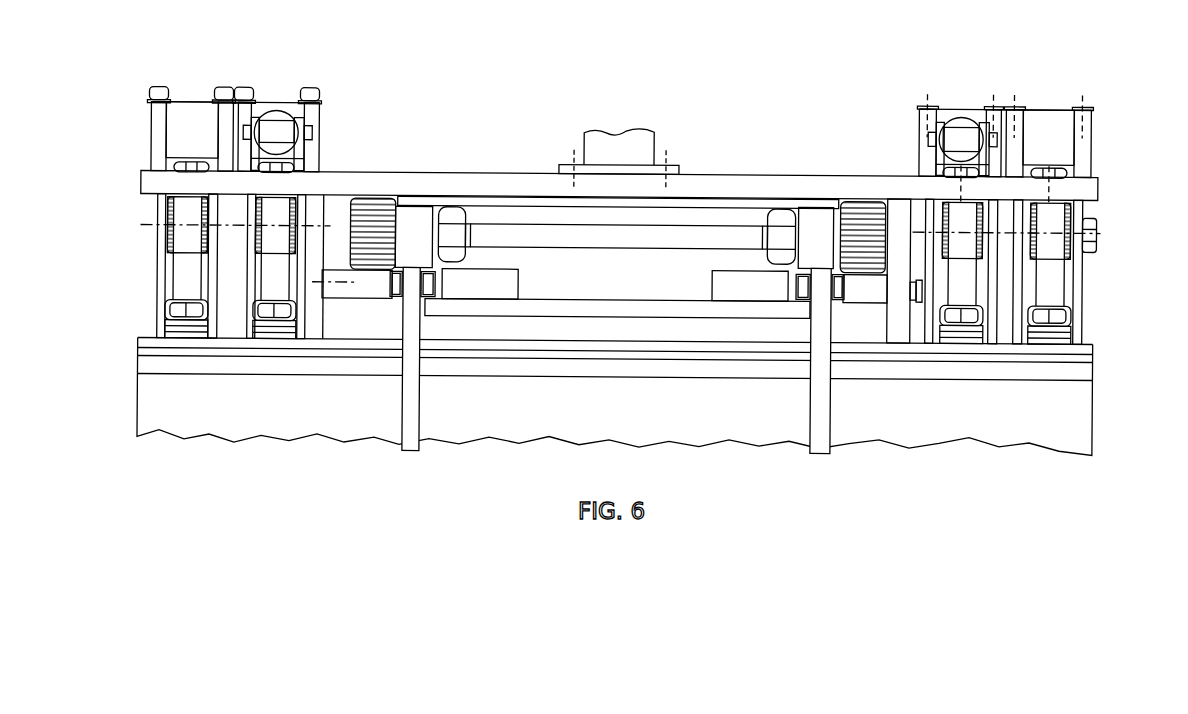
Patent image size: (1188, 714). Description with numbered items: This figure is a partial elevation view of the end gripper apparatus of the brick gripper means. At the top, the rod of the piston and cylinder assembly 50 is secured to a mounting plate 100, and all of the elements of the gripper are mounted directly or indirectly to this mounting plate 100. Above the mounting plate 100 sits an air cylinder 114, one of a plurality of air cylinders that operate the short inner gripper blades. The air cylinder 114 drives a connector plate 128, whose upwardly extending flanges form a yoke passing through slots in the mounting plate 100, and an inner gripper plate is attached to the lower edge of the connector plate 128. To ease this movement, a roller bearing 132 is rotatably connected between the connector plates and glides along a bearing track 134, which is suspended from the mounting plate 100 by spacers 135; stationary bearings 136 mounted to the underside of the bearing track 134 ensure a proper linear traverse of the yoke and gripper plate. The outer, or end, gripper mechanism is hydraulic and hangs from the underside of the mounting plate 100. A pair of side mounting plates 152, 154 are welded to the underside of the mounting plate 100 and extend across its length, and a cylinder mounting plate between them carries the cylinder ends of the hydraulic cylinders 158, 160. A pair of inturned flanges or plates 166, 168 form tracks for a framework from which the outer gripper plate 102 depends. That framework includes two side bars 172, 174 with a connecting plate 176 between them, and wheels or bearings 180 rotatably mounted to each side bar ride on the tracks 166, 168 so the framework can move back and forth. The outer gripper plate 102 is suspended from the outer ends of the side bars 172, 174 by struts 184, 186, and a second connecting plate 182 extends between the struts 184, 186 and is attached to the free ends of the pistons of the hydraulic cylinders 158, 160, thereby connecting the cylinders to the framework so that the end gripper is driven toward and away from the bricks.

The piston and cylinder assembly 50 is at (595, 150).
The mounting plate 100 is at (752, 186).
The outer gripper plate 102 is at (633, 418).
The air cylinder 114 is at (1045, 128).
The connector plate 128 is at (1084, 284).
The roller bearing 132 is at (1084, 246).
The bearing track 134 is at (1055, 300).
The spacer 135 is at (1058, 215).
The stationary bearing 136 is at (1068, 326).
The side mounting plate 152 is at (330, 215).
The side mounting plate 154 is at (898, 218).
The hydraulic cylinder 158 is at (490, 290).
The hydraulic cylinder 160 is at (730, 290).
The inturned flange 166 is at (372, 288).
The inturned flange 168 is at (862, 290).
The side bar 172 is at (412, 232).
The side bar 174 is at (818, 232).
The connecting plate 176 is at (640, 237).
The wheel or bearing 180 is at (373, 217).
The second connecting plate 182 is at (640, 315).
The strut 184 is at (410, 400).
The strut 186 is at (824, 410).